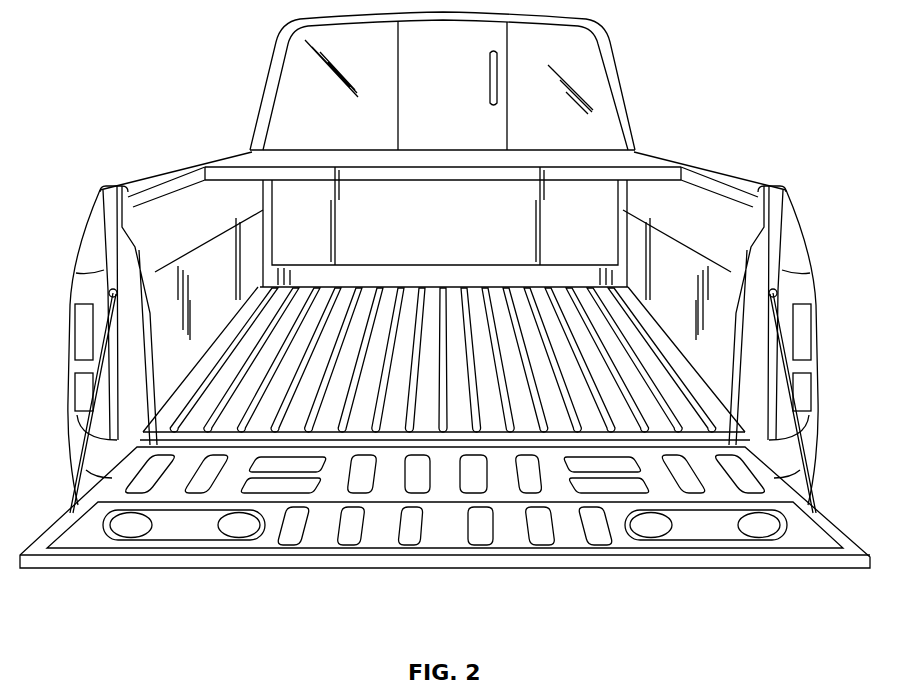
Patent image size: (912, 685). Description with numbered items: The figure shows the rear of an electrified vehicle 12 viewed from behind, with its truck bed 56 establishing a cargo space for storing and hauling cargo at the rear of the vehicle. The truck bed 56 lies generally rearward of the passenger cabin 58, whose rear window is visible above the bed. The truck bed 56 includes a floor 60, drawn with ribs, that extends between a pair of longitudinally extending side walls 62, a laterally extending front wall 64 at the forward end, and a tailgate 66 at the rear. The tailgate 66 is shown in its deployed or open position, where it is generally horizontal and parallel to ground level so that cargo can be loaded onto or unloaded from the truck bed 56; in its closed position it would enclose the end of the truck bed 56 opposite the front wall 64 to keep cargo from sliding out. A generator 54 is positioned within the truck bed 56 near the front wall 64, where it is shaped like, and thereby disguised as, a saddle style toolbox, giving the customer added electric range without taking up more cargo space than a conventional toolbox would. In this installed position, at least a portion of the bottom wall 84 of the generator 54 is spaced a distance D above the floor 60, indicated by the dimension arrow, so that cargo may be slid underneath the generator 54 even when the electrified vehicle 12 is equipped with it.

The electrified vehicle 12 is at (641, 38).
The passenger cabin 58 is at (594, 91).
The generator 54 is at (603, 165).
The truck bed 56 is at (201, 200).
The side walls 62 is at (152, 200).
The front wall 64 is at (612, 283).
The bottom wall 84 is at (564, 290).
The floor 60 is at (493, 385).
The tailgate 66 is at (570, 543).
The distance D is at (444, 287).